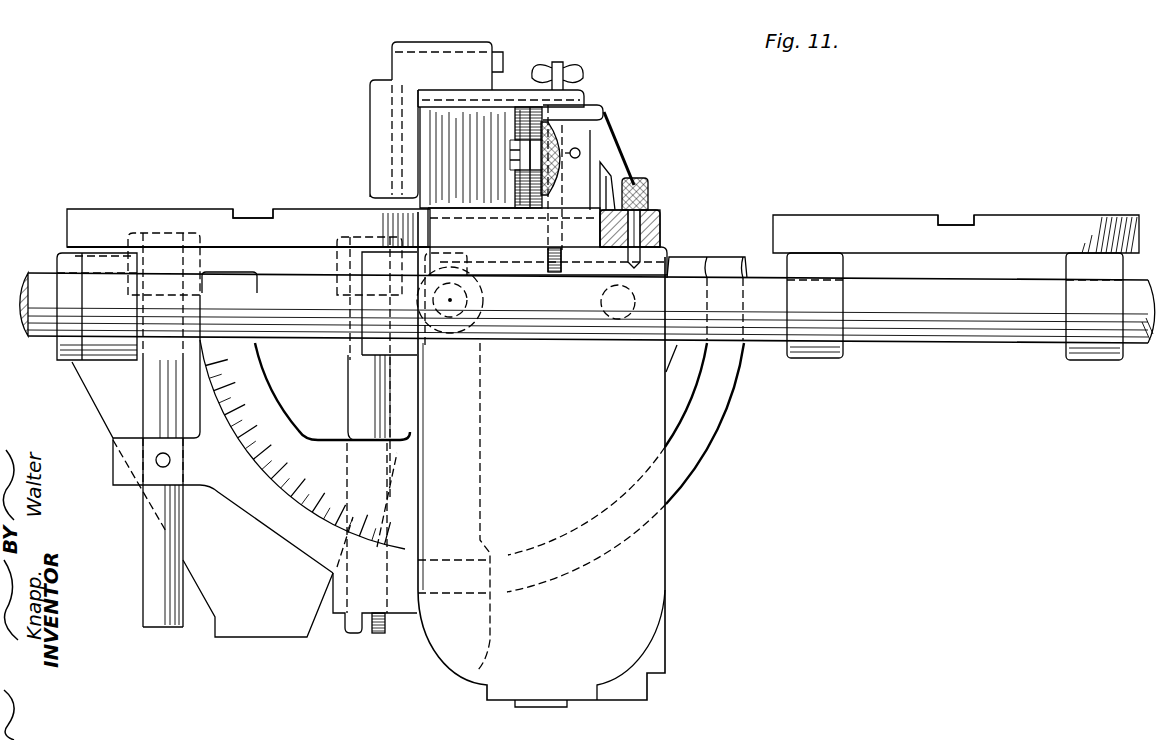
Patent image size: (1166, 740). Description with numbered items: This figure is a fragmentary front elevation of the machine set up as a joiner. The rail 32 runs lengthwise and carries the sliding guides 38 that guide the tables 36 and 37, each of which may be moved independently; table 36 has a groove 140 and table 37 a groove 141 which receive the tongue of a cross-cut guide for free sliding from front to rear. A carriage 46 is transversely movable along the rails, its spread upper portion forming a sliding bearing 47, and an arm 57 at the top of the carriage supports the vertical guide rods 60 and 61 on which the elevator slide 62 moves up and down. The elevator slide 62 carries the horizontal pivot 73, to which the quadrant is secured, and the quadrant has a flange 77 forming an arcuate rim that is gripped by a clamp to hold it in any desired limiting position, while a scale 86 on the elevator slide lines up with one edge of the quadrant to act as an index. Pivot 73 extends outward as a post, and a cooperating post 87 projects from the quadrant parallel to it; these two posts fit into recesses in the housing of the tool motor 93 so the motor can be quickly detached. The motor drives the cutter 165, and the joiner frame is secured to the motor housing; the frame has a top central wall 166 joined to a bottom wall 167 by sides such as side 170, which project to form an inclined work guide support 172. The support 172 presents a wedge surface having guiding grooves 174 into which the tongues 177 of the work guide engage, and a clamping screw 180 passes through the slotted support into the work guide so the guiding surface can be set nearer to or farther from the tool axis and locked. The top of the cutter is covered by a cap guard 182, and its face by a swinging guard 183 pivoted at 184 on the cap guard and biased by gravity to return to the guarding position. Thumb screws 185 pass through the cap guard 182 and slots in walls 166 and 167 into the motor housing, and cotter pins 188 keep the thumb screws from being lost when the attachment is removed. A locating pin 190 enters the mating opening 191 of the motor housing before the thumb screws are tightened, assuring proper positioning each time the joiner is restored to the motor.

The rail 32 is at (587, 306).
The table 36 is at (148, 214).
The table 37 is at (898, 223).
The sliding guide 38 is at (818, 330).
The carriage 46 is at (263, 633).
The sliding bearing 47 is at (62, 267).
The arm 57 is at (185, 233).
The guide rod 60 is at (155, 598).
The guide rod 61 is at (357, 630).
The elevator slide 62 is at (244, 405).
The pivot 73 is at (467, 302).
The flange 77 is at (693, 443).
The scale 86 is at (287, 475).
The post 87 is at (618, 307).
The tool motor 93 is at (541, 459).
The groove 140 is at (252, 217).
The groove 141 is at (956, 223).
The cutter 165 is at (490, 120).
The top central wall 166 is at (587, 113).
The bottom wall 167 is at (657, 222).
The side 170 is at (593, 172).
The work guide support 172 is at (527, 200).
The guiding groove 174 is at (520, 157).
The tongue 177 is at (482, 158).
The clamping screw 180 is at (585, 168).
The cap guard 182 is at (570, 100).
The swinging guard 183 is at (378, 153).
The pivot 184 is at (447, 52).
The thumb screw 185 is at (572, 68).
The cotter pin 188 is at (580, 150).
The locating pin 190 is at (648, 188).
The mating opening 191 is at (663, 253).